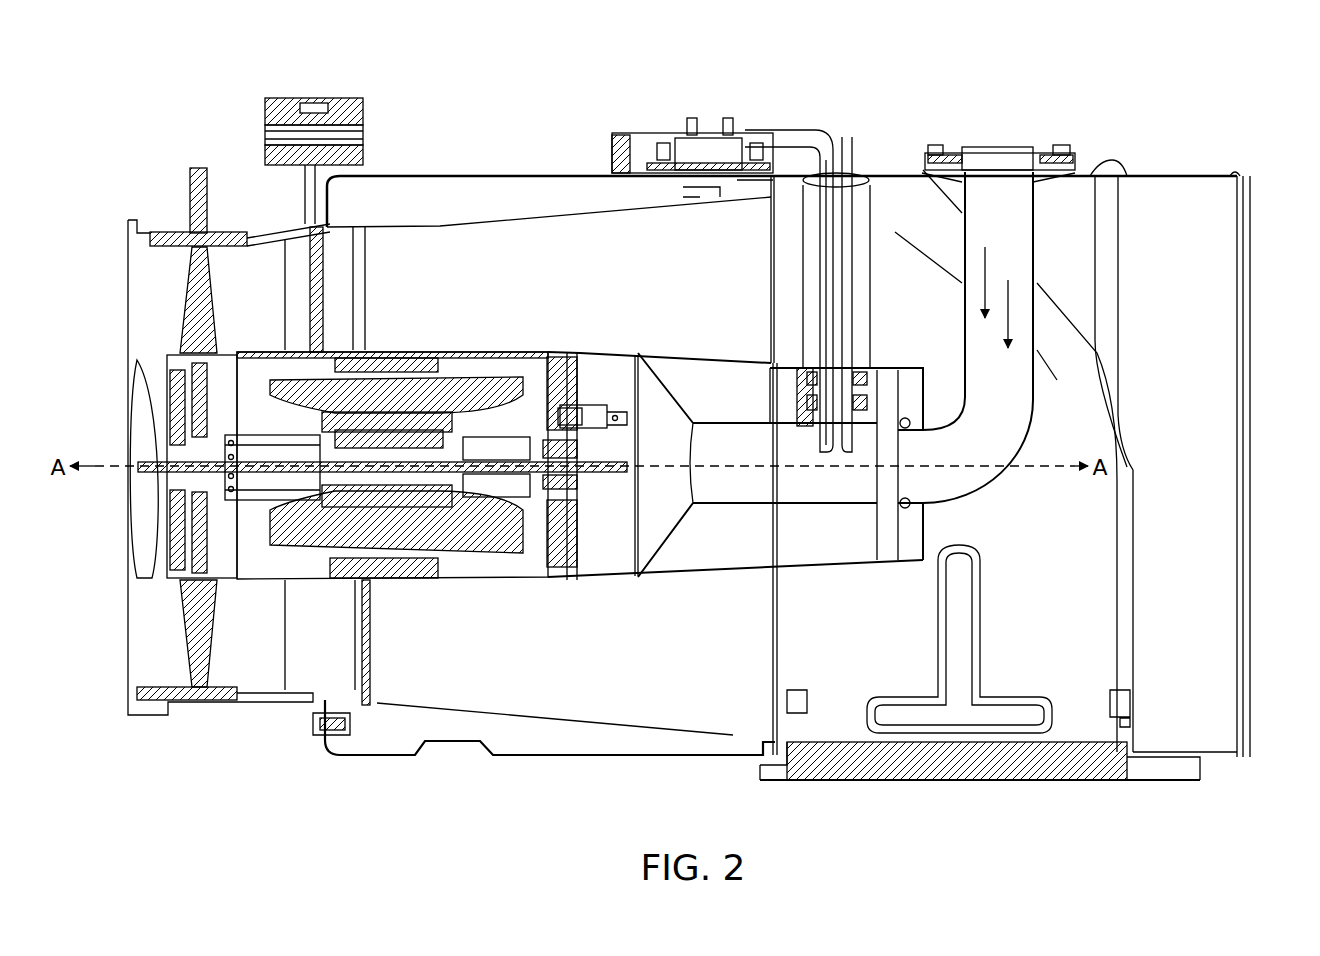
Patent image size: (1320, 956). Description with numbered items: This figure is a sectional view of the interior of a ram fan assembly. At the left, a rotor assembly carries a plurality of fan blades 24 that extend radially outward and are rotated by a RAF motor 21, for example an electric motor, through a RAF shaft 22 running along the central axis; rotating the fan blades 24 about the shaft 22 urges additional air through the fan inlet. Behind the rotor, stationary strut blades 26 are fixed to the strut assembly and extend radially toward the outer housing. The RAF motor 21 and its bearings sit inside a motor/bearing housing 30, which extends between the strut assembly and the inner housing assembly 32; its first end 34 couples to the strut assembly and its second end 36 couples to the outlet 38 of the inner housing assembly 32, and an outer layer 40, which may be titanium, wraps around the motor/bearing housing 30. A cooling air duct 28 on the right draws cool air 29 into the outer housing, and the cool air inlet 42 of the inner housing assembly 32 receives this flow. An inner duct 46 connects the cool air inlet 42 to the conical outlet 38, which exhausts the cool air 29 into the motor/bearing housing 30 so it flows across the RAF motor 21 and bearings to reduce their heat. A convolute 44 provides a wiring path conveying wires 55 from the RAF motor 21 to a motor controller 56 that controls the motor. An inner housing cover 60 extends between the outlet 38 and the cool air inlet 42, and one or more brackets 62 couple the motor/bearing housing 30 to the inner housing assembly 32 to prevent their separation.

The RAF motor 21 is at (348, 495).
The RAF shaft 22 is at (145, 460).
The fan blades 24 is at (185, 300).
The strut blades 26 is at (337, 262).
The cooling air duct 28 is at (982, 183).
The cool air 29 is at (1010, 310).
The motor/bearing housing 30 is at (466, 350).
The inner housing assembly 32 is at (673, 352).
The first end 34 is at (370, 357).
The second end 36 is at (556, 578).
The outlet 38 is at (607, 566).
The outer layer 40 is at (483, 575).
The cool air inlet 42 is at (888, 490).
The convolute 44 is at (862, 210).
The inner duct 46 is at (757, 490).
The wires 55 is at (838, 137).
The motor controller 56 is at (704, 140).
The inner housing cover 60 is at (692, 565).
The brackets 62 is at (596, 410).